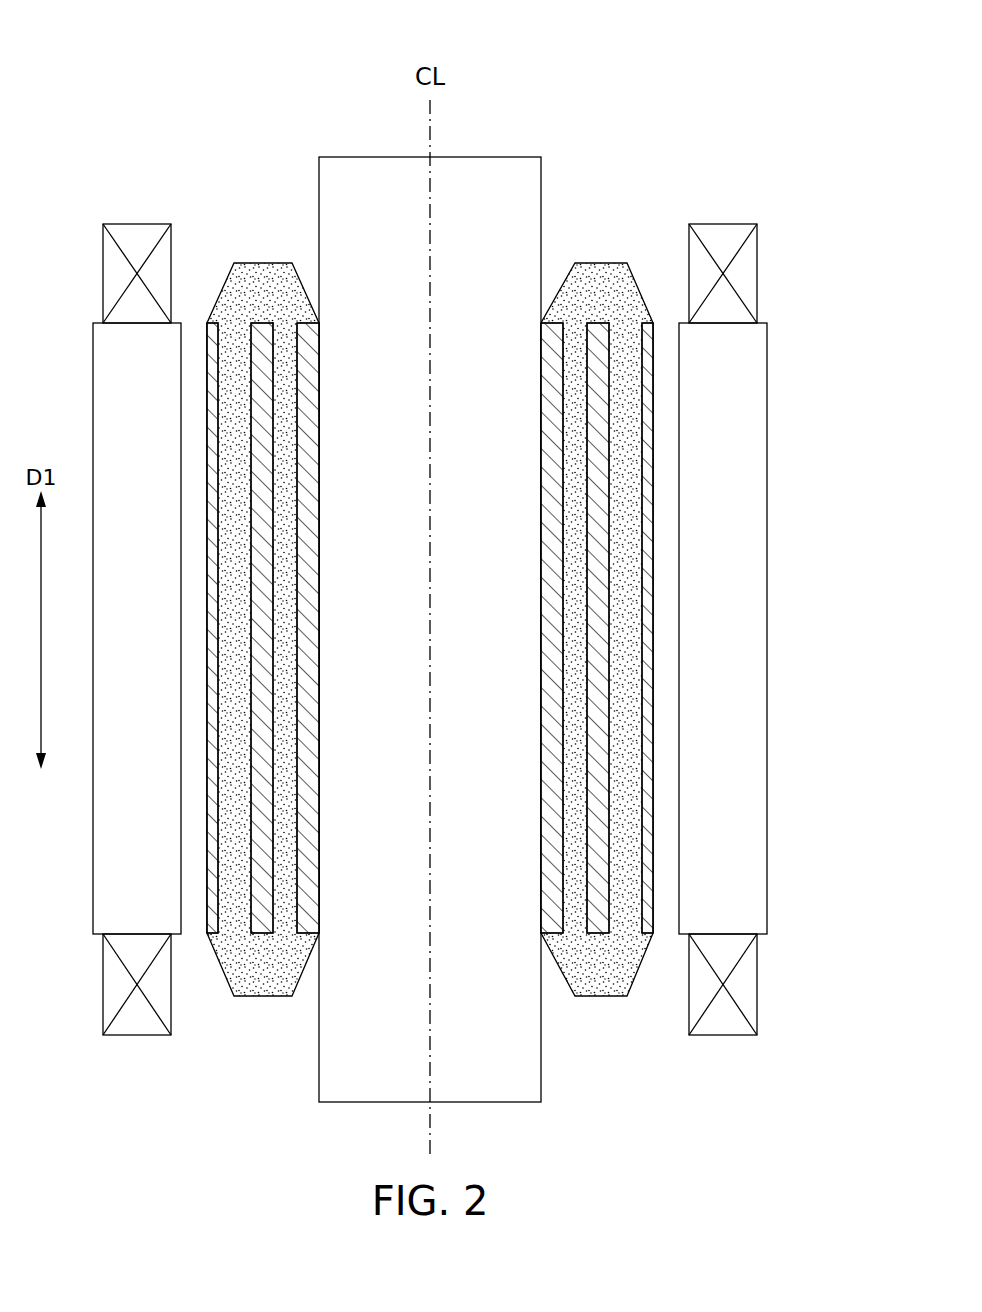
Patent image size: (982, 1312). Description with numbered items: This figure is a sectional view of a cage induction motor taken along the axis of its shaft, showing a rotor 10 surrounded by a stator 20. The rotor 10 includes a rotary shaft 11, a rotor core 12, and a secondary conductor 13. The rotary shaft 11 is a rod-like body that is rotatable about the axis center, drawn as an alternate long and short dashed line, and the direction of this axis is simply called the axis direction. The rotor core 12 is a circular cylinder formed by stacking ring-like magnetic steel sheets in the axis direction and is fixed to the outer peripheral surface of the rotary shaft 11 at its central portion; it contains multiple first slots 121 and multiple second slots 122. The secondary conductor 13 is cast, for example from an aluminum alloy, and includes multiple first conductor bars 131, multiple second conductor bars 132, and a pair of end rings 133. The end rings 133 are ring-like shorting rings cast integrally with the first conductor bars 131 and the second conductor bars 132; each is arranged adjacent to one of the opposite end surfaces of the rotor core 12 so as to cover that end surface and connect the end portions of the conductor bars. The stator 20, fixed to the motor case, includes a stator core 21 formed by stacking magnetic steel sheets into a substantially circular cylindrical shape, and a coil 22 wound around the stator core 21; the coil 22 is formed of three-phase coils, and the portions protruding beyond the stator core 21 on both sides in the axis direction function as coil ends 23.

The rotor 10 is at (600, 110).
The rotary shaft 11 is at (496, 157).
The rotor core 12 is at (611, 621).
The first slots 121 is at (636, 367).
The second slots 122 is at (571, 335).
The secondary conductor 13 is at (227, 549).
The first conductor bars 131 is at (240, 350).
The second conductor bars 132 is at (285, 352).
The end rings 133 is at (248, 263).
The stator 20 is at (497, 610).
The stator core 21 is at (769, 406).
The coil 22 is at (843, 423).
The coil ends 23 is at (477, 610).